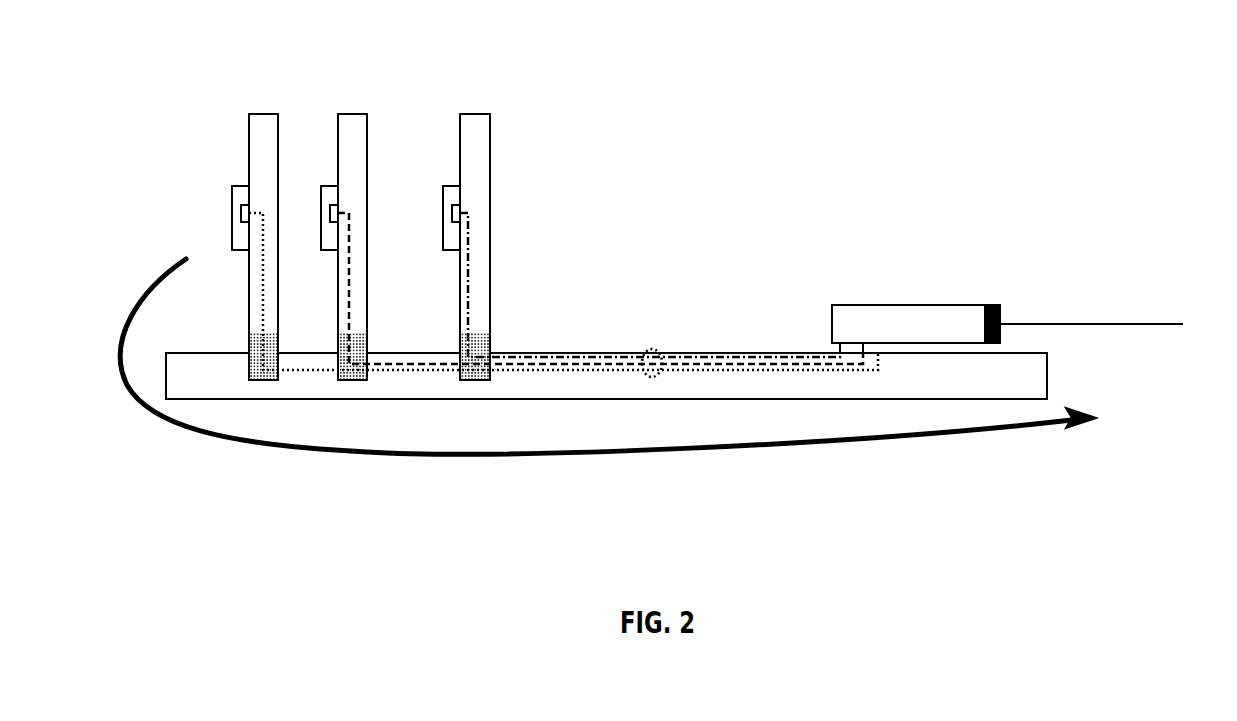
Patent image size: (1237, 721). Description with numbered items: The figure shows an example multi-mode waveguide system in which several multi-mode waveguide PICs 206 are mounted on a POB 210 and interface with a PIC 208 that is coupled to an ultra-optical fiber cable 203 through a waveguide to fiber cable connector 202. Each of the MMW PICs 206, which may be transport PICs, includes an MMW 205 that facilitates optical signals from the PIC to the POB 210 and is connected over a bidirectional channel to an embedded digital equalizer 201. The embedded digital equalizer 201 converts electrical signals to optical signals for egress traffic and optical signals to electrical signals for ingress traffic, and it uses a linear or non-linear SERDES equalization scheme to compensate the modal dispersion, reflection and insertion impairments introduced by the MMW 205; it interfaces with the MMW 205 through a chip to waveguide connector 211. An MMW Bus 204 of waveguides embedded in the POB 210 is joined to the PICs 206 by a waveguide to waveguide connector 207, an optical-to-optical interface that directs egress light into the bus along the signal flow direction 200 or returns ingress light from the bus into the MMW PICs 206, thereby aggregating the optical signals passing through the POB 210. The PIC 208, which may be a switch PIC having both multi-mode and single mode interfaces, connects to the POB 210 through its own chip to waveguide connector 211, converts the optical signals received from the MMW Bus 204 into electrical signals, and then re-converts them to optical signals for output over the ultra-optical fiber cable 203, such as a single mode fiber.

The signal flow direction 200 is at (632, 356).
The embedded digital equalizer 201 is at (247, 186).
The waveguide to fiber cable connector 202 is at (1000, 305).
The ultra-optical fiber cable 203 is at (1135, 324).
The MMW Bus 204 is at (652, 353).
The MMW 205 is at (467, 240).
The multi-mode waveguide PICs 206 is at (463, 114).
The waveguide to waveguide connector 207 is at (489, 338).
The PIC 208 is at (943, 305).
The POB 210 is at (985, 382).
The chip to waveguide connector 211 is at (241, 210).